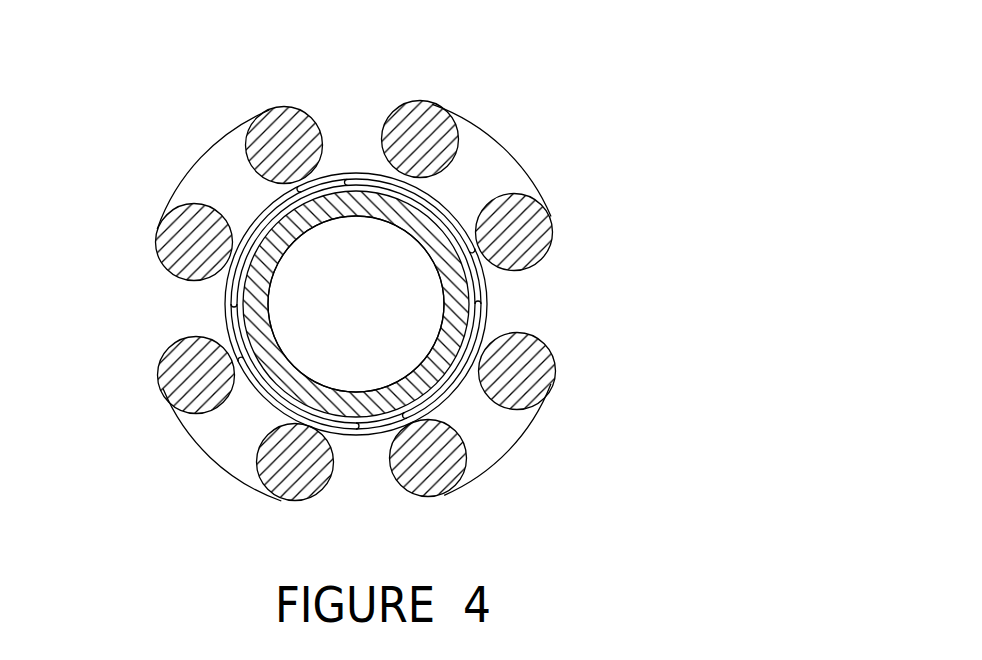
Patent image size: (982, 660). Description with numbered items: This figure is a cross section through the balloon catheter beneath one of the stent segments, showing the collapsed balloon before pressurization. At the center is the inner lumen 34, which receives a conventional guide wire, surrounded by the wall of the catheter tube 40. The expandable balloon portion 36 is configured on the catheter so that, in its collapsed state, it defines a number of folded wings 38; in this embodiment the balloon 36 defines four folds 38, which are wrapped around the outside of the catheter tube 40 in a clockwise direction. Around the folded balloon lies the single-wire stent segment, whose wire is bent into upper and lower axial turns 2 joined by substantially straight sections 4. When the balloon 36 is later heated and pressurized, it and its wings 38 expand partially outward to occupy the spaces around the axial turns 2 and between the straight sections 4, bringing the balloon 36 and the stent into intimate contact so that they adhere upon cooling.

The axial turns 2 is at (222, 137).
The straight sections 4 is at (421, 101).
The inner lumen 34 is at (410, 305).
The expandable balloon portion 36 is at (477, 269).
The folded wings 38 is at (448, 213).
The catheter tube 40 is at (334, 214).